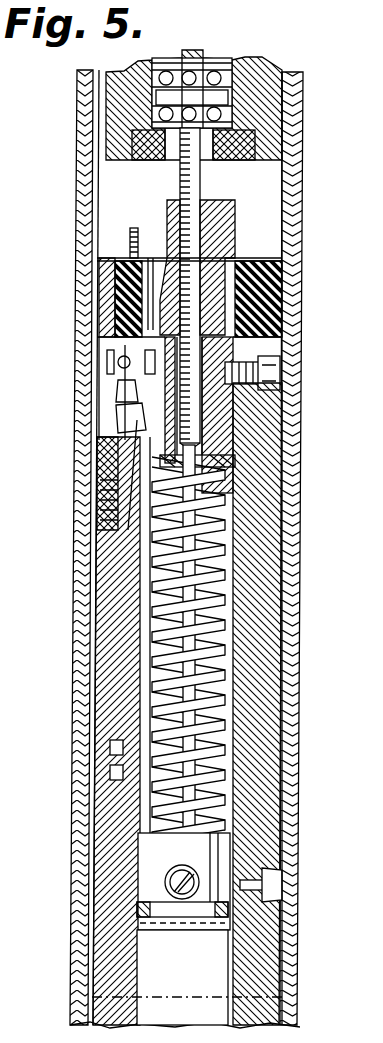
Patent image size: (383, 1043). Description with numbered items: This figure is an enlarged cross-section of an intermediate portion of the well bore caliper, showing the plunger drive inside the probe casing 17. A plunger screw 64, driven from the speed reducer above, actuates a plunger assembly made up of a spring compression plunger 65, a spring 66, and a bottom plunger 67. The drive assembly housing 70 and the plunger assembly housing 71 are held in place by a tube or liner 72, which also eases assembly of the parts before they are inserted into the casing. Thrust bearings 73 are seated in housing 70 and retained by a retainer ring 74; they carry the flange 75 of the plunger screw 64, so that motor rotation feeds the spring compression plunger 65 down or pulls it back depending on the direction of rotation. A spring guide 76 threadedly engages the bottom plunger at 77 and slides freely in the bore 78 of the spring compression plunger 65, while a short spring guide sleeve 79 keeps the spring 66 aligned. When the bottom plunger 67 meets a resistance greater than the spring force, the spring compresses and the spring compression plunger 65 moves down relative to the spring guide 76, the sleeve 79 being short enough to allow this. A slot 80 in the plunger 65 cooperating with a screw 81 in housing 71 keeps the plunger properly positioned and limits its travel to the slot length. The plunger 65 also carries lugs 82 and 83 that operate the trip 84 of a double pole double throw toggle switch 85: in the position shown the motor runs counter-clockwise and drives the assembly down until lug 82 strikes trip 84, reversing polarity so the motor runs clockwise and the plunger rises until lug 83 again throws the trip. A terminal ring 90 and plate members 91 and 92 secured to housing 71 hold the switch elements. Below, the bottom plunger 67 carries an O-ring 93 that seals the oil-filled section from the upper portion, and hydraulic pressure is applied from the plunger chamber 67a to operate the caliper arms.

The probe casing 17 is at (305, 86).
The plunger screw 64 is at (190, 60).
The spring compression plunger 65 is at (167, 212).
The spring 66 is at (247, 643).
The bottom plunger 67 is at (140, 863).
The plunger chamber 67a is at (187, 977).
The drive assembly housing 70 is at (275, 103).
The plunger assembly housing 71 is at (270, 442).
The tube or liner 72 is at (285, 72).
The thrust bearings 73 is at (225, 76).
The retainer ring 74 is at (152, 160).
The flange 75 is at (192, 96).
The spring guide 76 is at (205, 527).
The threaded engagement 77 is at (178, 866).
The bore 78 is at (195, 408).
The spring guide sleeve 79 is at (232, 680).
The slot 80 is at (233, 258).
The screw 81 is at (276, 386).
The lug 82 is at (152, 258).
The lug 83 is at (100, 470).
The trip 84 is at (112, 424).
The double pole double throw toggle switch 85 is at (102, 392).
The terminal ring 90 is at (100, 295).
The plate member 91 is at (97, 478).
The plate member 92 is at (100, 590).
The O-ring 93 is at (225, 908).